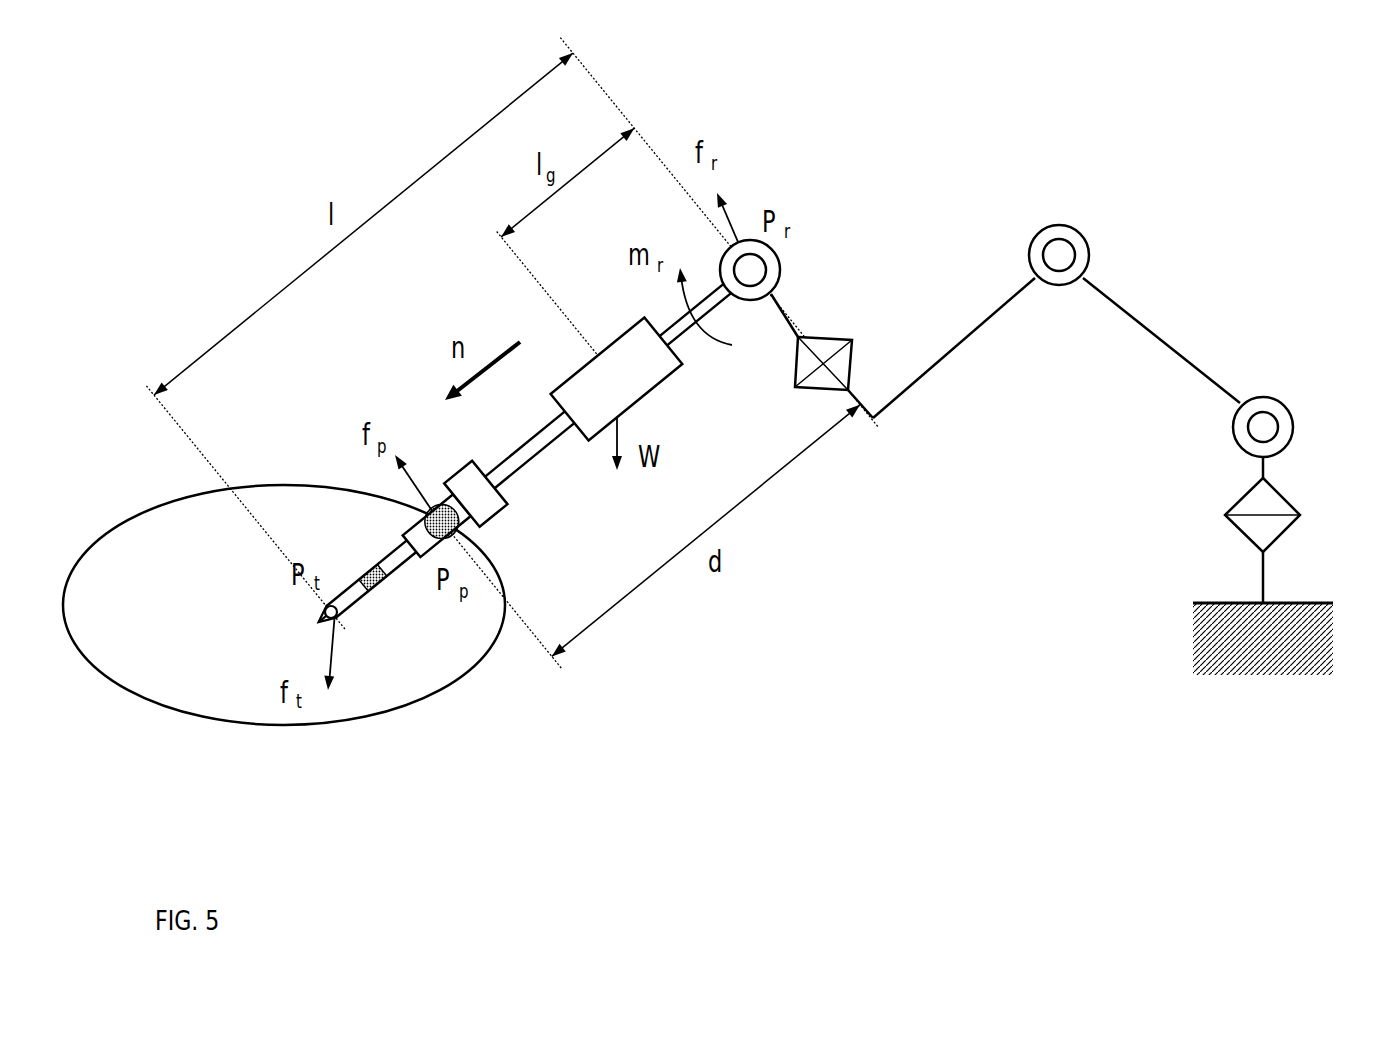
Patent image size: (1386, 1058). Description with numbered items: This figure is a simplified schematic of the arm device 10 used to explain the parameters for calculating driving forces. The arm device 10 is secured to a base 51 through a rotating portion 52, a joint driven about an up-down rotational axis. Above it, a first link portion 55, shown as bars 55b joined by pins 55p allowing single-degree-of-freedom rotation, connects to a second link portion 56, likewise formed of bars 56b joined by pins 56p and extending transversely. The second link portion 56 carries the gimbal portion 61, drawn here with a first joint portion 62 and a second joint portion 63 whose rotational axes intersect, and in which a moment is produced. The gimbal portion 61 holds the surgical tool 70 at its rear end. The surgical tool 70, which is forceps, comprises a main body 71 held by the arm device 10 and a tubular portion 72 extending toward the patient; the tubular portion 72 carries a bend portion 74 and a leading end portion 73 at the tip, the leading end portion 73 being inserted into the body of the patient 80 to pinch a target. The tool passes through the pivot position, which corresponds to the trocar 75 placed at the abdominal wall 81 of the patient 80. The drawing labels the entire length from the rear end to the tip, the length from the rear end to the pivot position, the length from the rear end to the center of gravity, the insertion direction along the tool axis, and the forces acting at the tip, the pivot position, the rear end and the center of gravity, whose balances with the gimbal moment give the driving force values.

The arm device 10 is at (1193, 190).
The base 51 is at (1210, 603).
The rotating portion 52 is at (1288, 498).
The first link portion 55 is at (1245, 337).
The bars 55b is at (1140, 318).
The pins 55p is at (1232, 425).
The second link portion 56 is at (959, 302).
The bars 56b is at (950, 353).
The pins 56p is at (1063, 226).
The gimbal portion 61 is at (846, 215).
The first joint portion 62 is at (834, 338).
The second joint portion 63 is at (773, 306).
The surgical tool 70 is at (406, 402).
The main body 71 is at (675, 377).
The tubular portion 72 is at (540, 468).
The leading end portion 73 is at (340, 622).
The bend portion 74 is at (370, 567).
The trocar 75 is at (497, 527).
The patient 80 is at (146, 487).
The abdominal wall 81 is at (270, 487).